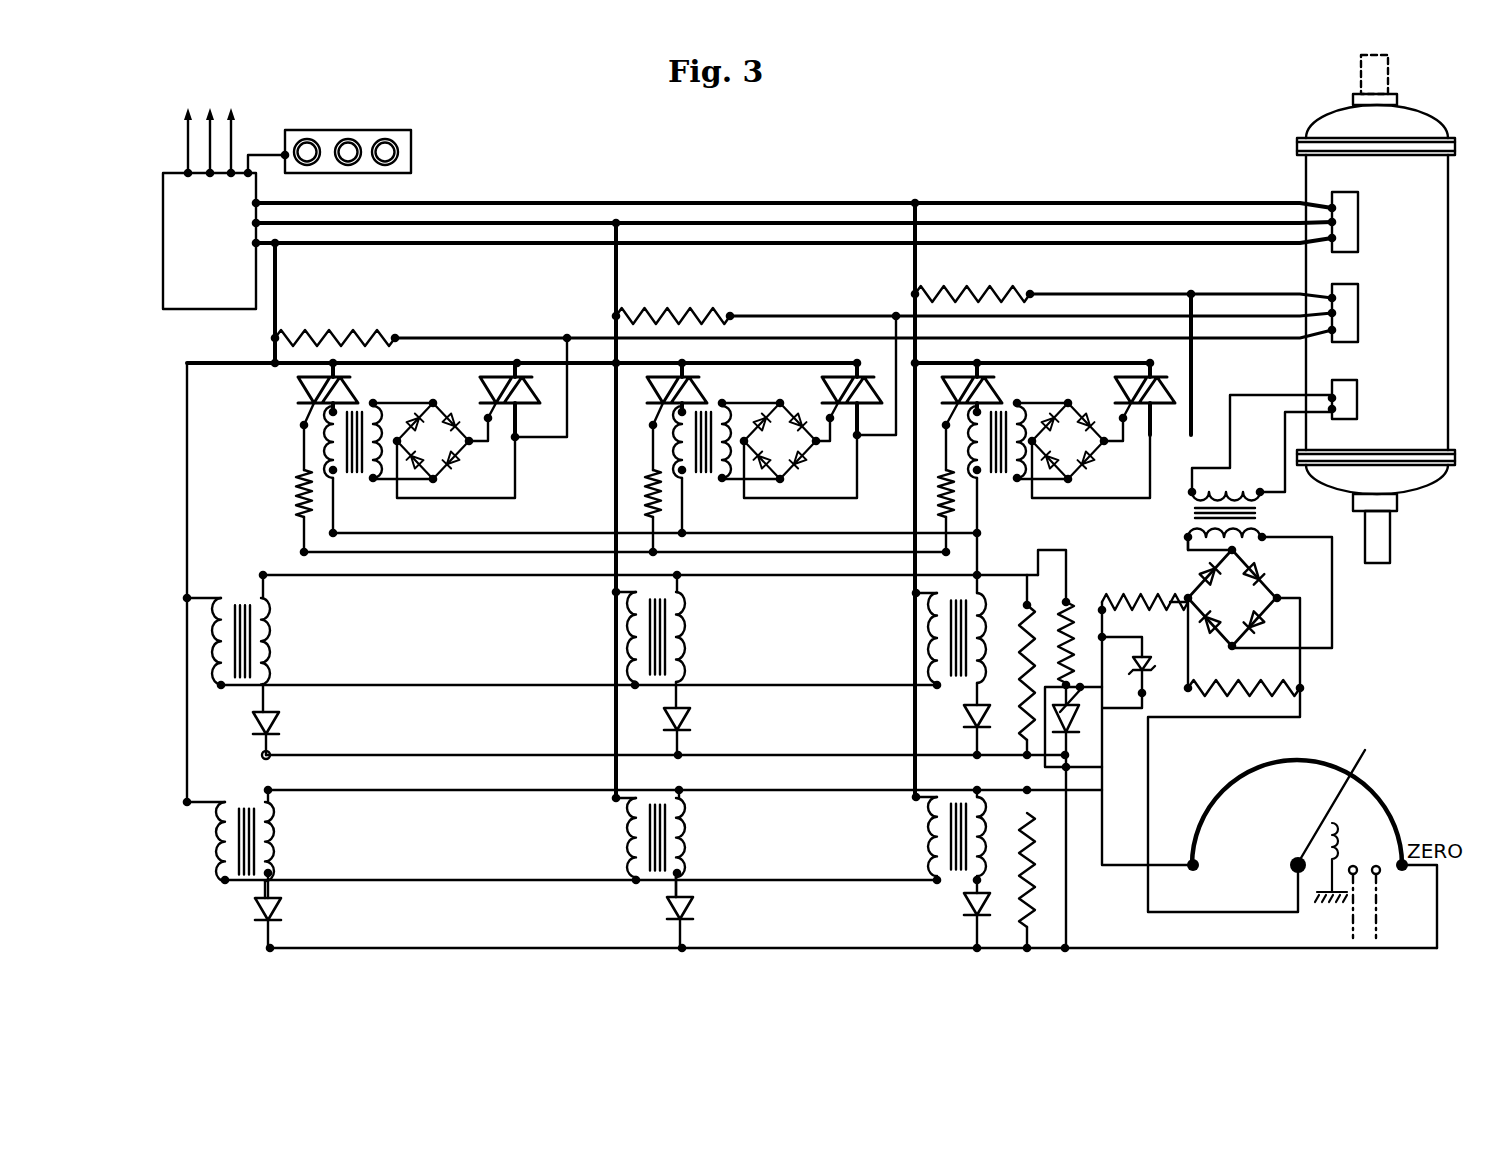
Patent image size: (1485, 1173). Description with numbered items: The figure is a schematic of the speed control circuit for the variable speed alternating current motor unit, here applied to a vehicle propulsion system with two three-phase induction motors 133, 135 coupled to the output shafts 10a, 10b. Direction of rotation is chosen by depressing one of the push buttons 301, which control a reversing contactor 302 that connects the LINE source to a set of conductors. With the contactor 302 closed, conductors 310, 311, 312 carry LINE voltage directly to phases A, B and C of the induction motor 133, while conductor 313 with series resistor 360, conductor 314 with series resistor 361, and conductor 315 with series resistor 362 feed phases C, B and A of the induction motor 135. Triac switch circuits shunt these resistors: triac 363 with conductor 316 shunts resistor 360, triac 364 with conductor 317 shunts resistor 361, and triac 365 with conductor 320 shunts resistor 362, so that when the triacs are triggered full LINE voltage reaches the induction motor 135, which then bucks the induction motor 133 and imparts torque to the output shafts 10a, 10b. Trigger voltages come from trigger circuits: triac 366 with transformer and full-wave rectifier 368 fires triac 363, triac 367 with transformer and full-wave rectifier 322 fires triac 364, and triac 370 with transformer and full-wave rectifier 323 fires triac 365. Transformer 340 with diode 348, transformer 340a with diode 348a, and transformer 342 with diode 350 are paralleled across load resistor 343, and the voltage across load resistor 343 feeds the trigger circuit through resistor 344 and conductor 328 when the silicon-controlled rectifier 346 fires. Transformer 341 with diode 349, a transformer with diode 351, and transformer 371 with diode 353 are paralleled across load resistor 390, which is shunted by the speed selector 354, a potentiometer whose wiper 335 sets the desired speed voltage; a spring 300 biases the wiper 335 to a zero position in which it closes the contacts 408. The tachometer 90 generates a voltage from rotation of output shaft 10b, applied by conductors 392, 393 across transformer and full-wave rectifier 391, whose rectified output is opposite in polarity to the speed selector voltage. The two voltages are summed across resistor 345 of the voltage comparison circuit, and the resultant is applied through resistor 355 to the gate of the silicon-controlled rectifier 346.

The output shaft 10a is at (1350, 78).
The output shaft 10b is at (1390, 538).
The motor speed transducer 90 is at (1357, 415).
The induction motor 133 is at (1358, 232).
The induction motor 135 is at (1358, 340).
The spring 300 is at (1340, 842).
The push buttons 301 is at (425, 155).
The reversing contactor 302 is at (226, 263).
The conductor 310 is at (486, 201).
The conductor 311 is at (566, 218).
The conductor 312 is at (648, 241).
The conductor 313 is at (277, 282).
The conductor 314 is at (614, 273).
The conductor 315 is at (913, 278).
The conductor 316 is at (575, 438).
The conductor 317 is at (880, 438).
The conductor 320 is at (1193, 373).
The transformer and full-wave rectifier 322 is at (780, 482).
The transformer and full-wave rectifier 323 is at (1068, 482).
The conductor 328 is at (513, 552).
The wiper 335 is at (1320, 822).
The transformer 340 is at (243, 612).
The transformer 340a is at (688, 629).
The transformer 341 is at (255, 838).
The transformer 342 is at (946, 622).
The load resistor 343 is at (1036, 600).
The resistor 344 is at (1070, 630).
The resistor 345 is at (1262, 680).
The silicon-controlled rectifier 346 is at (1080, 726).
The diode 348 is at (281, 723).
The diode 348a is at (690, 712).
The diode 349 is at (283, 911).
The diode 350 is at (965, 722).
The diode 351 is at (965, 907).
The diode 353 is at (697, 908).
The speed selector 354 is at (1290, 758).
The resistor 355 is at (1128, 605).
The series resistor 360 is at (375, 313).
The series resistor 361 is at (712, 290).
The series resistor 362 is at (1012, 274).
The triac 363 is at (538, 394).
The triac 364 is at (828, 389).
The triac 365 is at (1115, 392).
The triac 366 is at (355, 393).
The triac 367 is at (703, 391).
The transformer and full-wave rectifier 368 is at (433, 482).
The triac 370 is at (990, 392).
The transformer 371 is at (662, 832).
The load resistor 390 is at (1035, 890).
The transformer and full-wave rectifier 391 is at (1263, 567).
The conductor 392 is at (1278, 390).
The conductor 393 is at (1287, 450).
The contacts 408 is at (1368, 889).